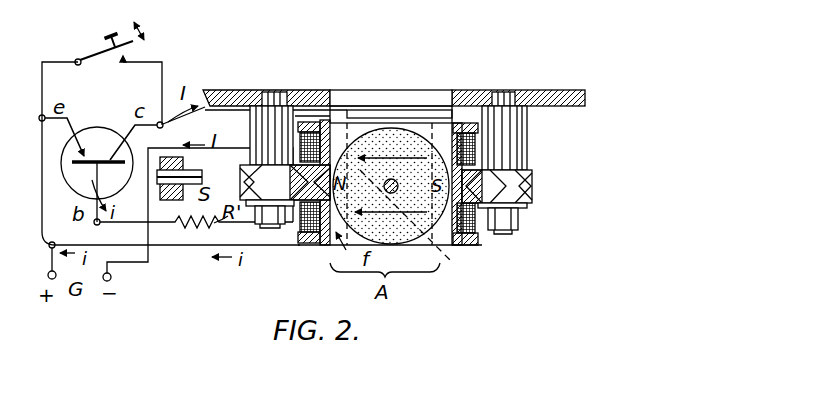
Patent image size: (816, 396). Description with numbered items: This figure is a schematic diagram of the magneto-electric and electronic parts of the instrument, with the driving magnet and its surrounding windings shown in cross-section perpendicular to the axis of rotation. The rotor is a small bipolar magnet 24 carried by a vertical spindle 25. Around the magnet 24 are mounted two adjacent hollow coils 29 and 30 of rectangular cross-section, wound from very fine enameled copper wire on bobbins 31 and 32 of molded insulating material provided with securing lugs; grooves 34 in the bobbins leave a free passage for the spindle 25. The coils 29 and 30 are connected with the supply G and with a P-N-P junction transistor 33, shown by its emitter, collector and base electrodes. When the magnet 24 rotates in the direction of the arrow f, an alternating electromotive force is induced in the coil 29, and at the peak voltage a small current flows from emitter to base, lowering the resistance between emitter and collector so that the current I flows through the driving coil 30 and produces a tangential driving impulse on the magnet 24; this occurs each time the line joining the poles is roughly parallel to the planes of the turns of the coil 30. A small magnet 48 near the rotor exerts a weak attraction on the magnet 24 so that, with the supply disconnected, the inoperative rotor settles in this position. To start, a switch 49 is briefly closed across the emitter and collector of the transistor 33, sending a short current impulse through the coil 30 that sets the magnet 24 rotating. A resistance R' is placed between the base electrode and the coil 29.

The bipolar magnet 24 is at (375, 132).
The vertical spindle 25 is at (397, 180).
The coil 29 is at (300, 238).
The coil 30 is at (462, 140).
The bobbin 31 is at (533, 186).
The bobbin 32 is at (528, 197).
The junction transistor 33 is at (108, 117).
The grooves 34 is at (418, 227).
The small magnet 48 is at (200, 177).
The switch 49 is at (116, 60).